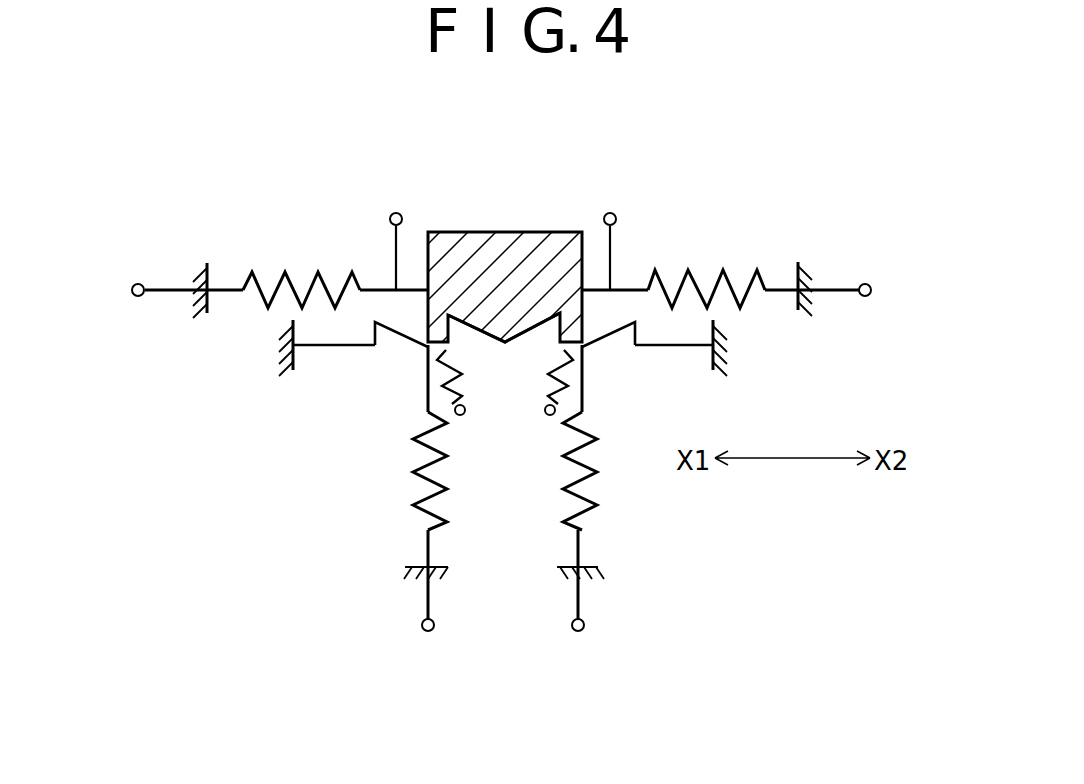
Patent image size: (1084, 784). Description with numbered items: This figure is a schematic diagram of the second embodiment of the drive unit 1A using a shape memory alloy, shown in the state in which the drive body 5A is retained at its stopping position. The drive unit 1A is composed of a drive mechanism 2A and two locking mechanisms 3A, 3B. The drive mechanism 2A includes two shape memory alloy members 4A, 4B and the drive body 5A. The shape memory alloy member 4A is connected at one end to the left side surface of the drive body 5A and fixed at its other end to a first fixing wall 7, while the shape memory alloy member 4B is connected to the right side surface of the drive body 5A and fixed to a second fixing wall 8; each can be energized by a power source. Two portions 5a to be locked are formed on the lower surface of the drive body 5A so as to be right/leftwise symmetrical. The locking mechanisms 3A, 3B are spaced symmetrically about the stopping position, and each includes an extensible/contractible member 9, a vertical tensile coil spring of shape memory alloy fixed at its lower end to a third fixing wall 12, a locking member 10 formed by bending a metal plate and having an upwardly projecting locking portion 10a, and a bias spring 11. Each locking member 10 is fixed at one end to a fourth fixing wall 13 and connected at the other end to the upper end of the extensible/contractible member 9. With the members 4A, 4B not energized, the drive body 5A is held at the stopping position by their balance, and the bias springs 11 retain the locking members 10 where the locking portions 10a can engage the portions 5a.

The drive unit 1A is at (664, 172).
The drive mechanism 2A is at (354, 175).
The locking mechanism 3A is at (304, 502).
The locking mechanism 3B is at (633, 500).
The shape memory alloy member 4A is at (317, 280).
The shape memory alloy member 4B is at (725, 270).
The drive body 5A is at (513, 232).
The portion to be locked 5a is at (456, 333).
The first fixing wall 7 is at (210, 297).
The second fixing wall 8 is at (797, 295).
The extensible/contractible member 9 is at (435, 462).
The locking member 10 is at (328, 347).
The locking portion 10a is at (397, 325).
The bias spring 11 is at (552, 395).
The third fixing wall 12 is at (443, 567).
The fourth fixing wall 13 is at (297, 355).